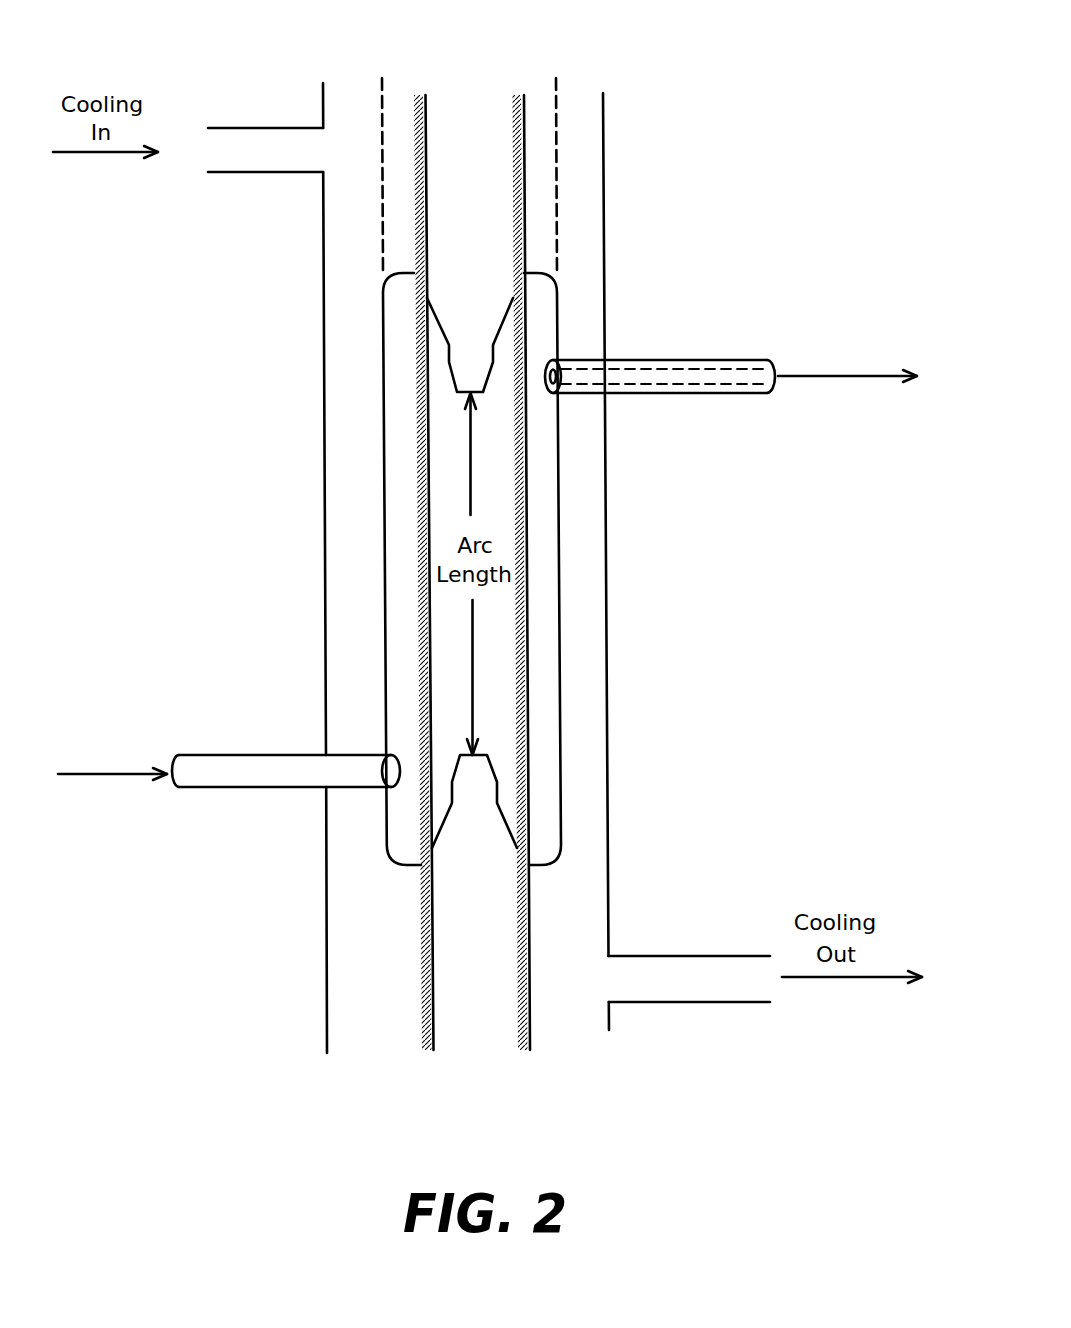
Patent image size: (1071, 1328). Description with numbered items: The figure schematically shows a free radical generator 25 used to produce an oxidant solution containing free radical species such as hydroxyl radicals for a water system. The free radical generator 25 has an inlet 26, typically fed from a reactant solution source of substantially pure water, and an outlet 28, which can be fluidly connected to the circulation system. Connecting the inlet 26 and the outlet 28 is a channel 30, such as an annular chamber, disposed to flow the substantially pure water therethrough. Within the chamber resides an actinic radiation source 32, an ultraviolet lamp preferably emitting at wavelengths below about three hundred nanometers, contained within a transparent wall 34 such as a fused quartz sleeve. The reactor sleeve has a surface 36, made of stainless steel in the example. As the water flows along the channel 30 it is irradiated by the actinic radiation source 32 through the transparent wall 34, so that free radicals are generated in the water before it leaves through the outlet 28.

The free radical generator 25 is at (640, 88).
The inlet 26 is at (260, 787).
The outlet 28 is at (710, 358).
The channel 30 is at (538, 695).
The actinic radiation source 32 is at (453, 447).
The transparent wall 34 is at (530, 897).
The surface 36 is at (386, 630).